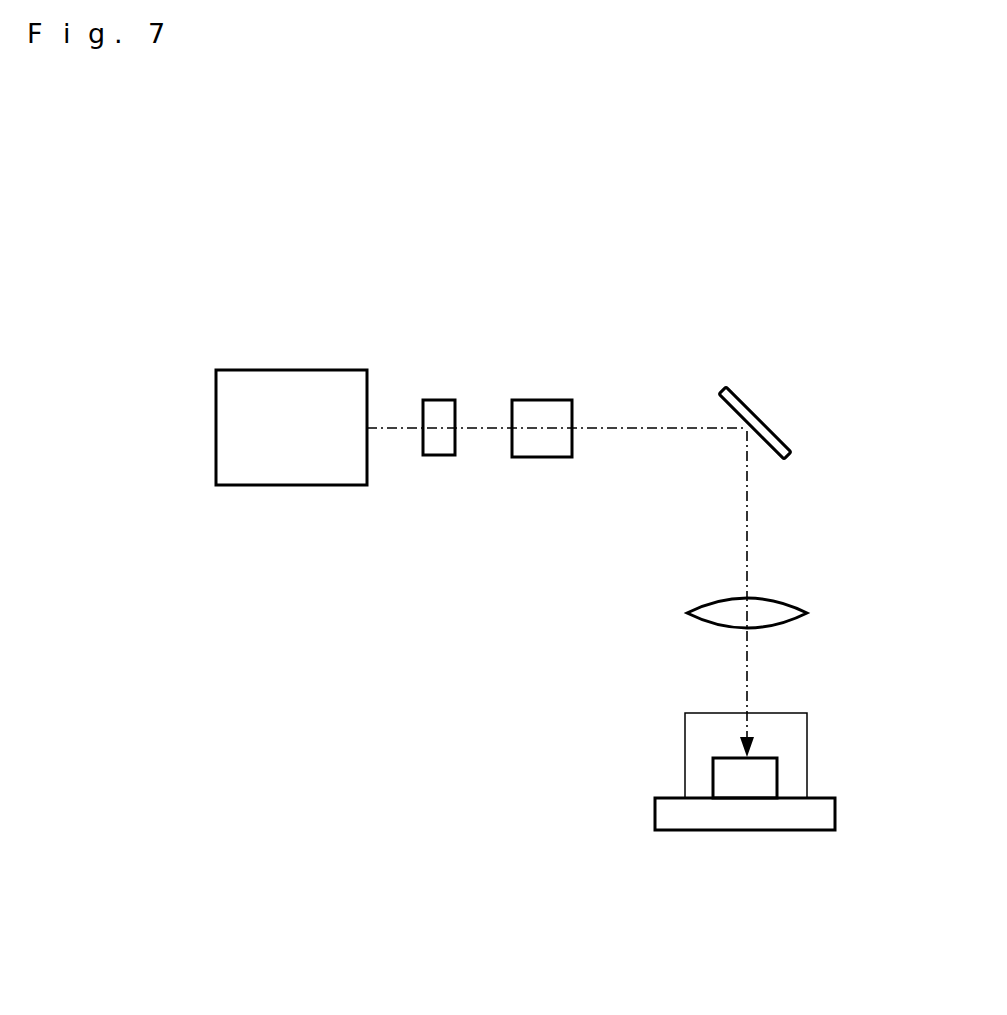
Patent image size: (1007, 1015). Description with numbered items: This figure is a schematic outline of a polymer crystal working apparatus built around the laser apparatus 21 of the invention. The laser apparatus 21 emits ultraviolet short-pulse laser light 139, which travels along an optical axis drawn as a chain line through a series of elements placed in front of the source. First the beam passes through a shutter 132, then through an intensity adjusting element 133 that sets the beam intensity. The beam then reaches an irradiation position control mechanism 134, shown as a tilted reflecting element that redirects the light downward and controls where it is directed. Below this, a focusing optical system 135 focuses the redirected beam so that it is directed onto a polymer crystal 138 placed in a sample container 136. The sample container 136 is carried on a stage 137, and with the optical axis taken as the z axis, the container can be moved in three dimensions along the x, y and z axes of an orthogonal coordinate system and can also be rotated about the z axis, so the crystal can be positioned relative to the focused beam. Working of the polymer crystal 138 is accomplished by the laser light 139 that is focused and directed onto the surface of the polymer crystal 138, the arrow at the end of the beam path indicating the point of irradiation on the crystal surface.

The laser apparatus 21 is at (303, 369).
The shutter 132 is at (453, 400).
The intensity adjusting element 133 is at (547, 398).
The irradiation position control mechanism 134 is at (765, 425).
The focusing optical system 135 is at (790, 600).
The sample container 136 is at (807, 737).
The stage 137 is at (837, 803).
The polymer crystal 138 is at (713, 780).
The ultraviolet short-pulse laser light 139 is at (642, 427).